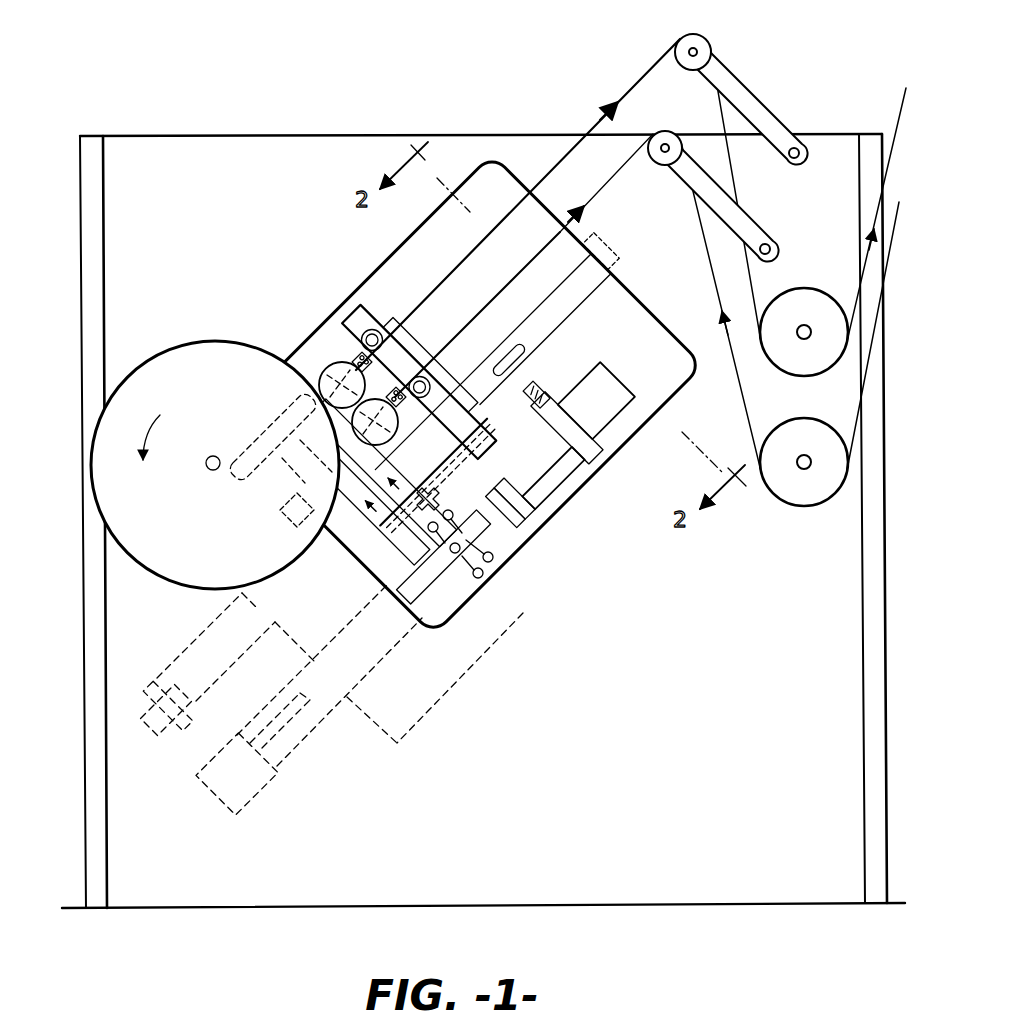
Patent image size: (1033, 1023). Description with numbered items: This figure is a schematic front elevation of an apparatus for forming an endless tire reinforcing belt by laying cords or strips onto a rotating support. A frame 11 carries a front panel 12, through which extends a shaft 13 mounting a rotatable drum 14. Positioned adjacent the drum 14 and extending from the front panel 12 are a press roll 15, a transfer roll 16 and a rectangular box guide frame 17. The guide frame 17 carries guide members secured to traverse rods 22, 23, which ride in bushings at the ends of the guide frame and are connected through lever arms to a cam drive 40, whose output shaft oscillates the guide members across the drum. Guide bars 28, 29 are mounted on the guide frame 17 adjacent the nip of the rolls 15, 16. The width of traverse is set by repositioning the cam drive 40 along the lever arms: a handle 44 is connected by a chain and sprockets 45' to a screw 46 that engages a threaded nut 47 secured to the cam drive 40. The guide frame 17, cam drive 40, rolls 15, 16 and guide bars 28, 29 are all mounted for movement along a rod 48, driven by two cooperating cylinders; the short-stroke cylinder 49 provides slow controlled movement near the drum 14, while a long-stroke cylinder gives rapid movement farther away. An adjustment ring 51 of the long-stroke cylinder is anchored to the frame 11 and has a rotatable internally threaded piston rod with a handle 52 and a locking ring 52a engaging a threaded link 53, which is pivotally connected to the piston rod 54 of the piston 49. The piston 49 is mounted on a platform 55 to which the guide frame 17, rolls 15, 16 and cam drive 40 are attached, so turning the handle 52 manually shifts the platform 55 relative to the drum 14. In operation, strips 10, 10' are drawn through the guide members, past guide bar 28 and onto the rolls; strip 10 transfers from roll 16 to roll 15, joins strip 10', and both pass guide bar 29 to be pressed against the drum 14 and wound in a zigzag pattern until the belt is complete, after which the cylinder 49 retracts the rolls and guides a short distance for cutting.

The strip 10 is at (650, 261).
The strip 10' is at (518, 204).
The frame 11 is at (92, 148).
The front panel 12 is at (213, 150).
The shaft 13 is at (210, 457).
The rotatable drum 14 is at (168, 572).
The press roll 15 is at (326, 370).
The transfer roll 16 is at (398, 416).
The rectangular box guide frame 17 is at (357, 322).
The traverse rod 22 is at (378, 327).
The traverse rod 23 is at (433, 382).
The guide bar 28 is at (403, 350).
The guide bar 29 is at (279, 459).
The cam drive 40 is at (452, 690).
The handle 44 is at (527, 353).
The sprockets 45' is at (544, 390).
The screw 46 is at (443, 477).
The threaded nut 47 is at (446, 492).
The rod 48 is at (584, 296).
The cylinder 49 is at (623, 388).
The adjustment ring 51 is at (425, 577).
The handle 52 is at (480, 587).
The locking ring 52a is at (483, 576).
The threaded link 53 is at (528, 543).
The piston rod 54 is at (554, 521).
The platform 55 is at (568, 494).